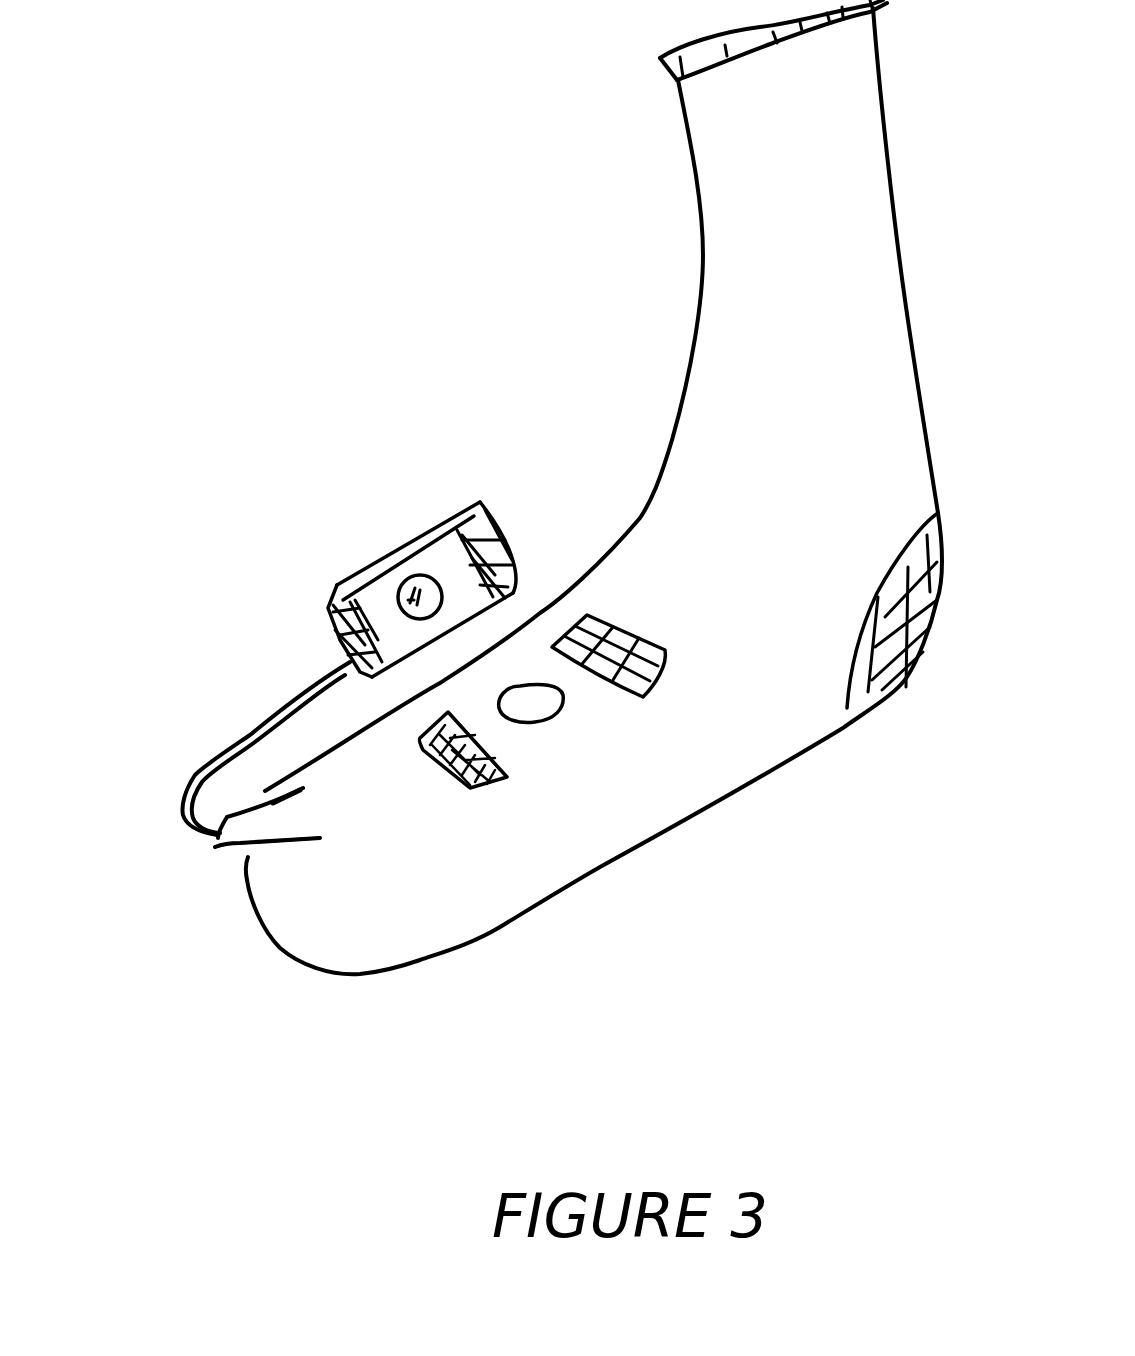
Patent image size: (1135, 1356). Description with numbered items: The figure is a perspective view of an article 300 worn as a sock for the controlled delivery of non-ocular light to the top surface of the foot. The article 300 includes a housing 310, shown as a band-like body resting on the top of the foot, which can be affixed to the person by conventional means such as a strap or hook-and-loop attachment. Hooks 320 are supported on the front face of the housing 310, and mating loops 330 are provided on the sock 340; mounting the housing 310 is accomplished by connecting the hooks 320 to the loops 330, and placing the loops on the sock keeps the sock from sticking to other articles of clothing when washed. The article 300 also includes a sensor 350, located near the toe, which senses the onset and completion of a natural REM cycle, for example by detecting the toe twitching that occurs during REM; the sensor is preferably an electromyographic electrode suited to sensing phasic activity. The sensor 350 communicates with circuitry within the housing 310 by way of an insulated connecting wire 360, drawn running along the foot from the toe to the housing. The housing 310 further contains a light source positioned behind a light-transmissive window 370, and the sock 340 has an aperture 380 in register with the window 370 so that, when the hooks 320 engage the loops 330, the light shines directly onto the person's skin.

The article 300 is at (381, 514).
The housing 310 is at (470, 517).
The hooks 320 is at (490, 538).
The loops 330 is at (640, 700).
The sock 340 is at (428, 933).
The sensor 350 is at (237, 838).
The insulated connecting wire 360 is at (193, 772).
The light-transmissive window 370 is at (420, 620).
The aperture 380 is at (528, 710).